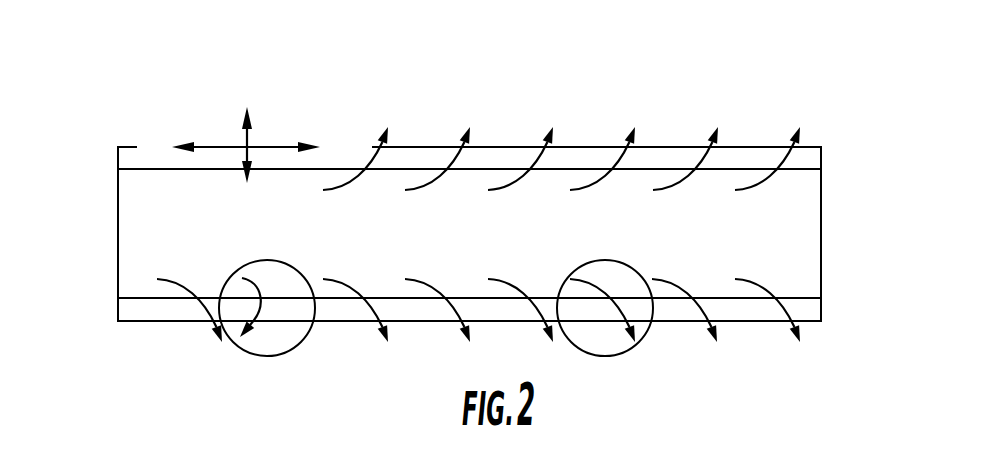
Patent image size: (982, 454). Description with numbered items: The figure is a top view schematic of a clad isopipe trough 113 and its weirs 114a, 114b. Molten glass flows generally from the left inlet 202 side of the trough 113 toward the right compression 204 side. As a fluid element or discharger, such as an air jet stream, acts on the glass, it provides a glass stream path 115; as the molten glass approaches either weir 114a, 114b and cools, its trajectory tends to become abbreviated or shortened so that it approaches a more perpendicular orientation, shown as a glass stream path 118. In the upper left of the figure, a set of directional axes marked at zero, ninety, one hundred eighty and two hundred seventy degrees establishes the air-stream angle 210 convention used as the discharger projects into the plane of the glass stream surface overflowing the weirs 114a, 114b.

The clad isopipe trough 113 is at (448, 220).
The weir 114a is at (810, 160).
The weir 114b is at (815, 307).
The glass stream path 115 is at (605, 356).
The glass stream path 118 is at (267, 357).
The inlet side 202 is at (108, 170).
The compression side 204 is at (832, 180).
The air-stream angle 210 is at (247, 147).